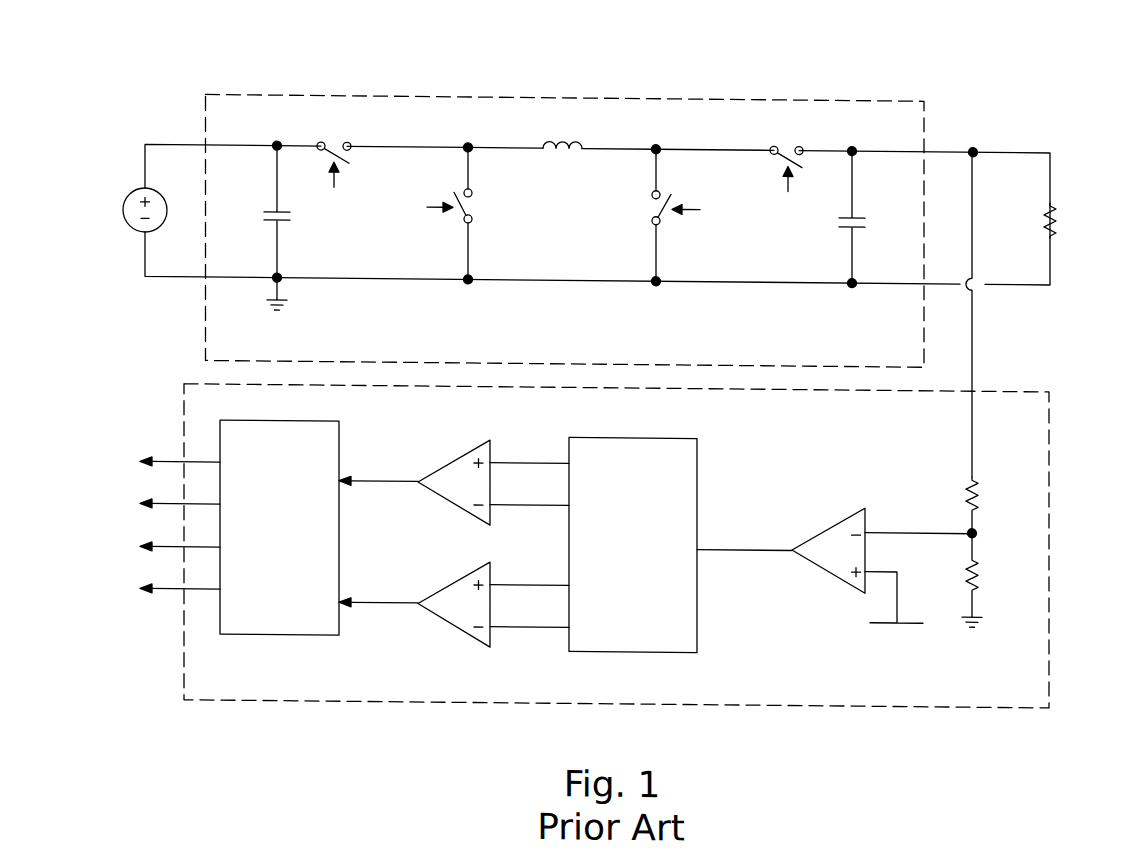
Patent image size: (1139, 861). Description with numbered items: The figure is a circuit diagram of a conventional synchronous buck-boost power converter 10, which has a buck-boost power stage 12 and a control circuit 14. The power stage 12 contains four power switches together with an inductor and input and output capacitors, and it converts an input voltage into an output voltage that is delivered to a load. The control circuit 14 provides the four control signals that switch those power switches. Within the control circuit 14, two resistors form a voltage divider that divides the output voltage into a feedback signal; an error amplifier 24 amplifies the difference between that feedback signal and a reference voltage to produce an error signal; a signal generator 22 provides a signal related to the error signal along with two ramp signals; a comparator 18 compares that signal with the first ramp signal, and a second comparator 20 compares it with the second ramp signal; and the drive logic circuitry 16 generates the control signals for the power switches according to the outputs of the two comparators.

The synchronous buck-boost power converter 10 is at (1002, 66).
The buck-boost power stage 12 is at (205, 315).
The control circuit 14 is at (1049, 530).
The drive logic circuitry 16 is at (339, 534).
The comparator 18 is at (455, 453).
The comparator 20 is at (450, 626).
The signal generator 22 is at (698, 492).
The error amplifier 24 is at (828, 567).